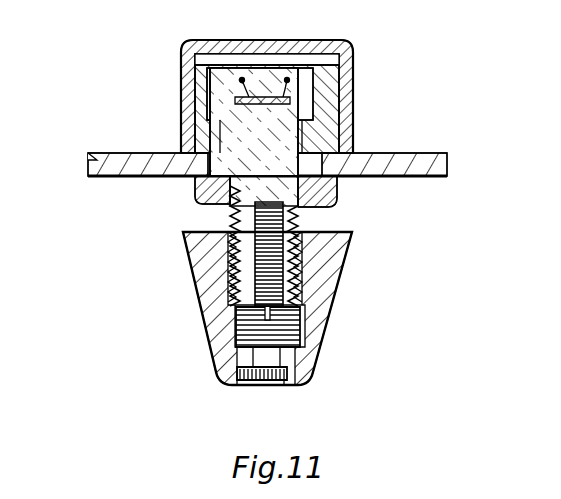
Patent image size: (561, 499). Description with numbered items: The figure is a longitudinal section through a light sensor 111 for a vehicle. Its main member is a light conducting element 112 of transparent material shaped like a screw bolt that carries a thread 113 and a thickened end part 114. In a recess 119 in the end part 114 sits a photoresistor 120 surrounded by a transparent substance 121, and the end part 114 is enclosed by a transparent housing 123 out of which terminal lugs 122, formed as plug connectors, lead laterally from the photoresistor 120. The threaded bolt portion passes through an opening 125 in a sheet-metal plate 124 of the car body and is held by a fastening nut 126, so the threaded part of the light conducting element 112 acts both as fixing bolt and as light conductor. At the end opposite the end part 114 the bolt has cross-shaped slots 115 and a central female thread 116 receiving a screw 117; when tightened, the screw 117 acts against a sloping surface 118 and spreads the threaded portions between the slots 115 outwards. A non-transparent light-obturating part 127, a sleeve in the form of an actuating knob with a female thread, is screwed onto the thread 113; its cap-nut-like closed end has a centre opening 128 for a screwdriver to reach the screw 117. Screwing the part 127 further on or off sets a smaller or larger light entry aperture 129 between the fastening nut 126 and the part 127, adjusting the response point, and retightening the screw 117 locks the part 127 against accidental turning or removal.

The light sensor 111 is at (360, 251).
The light conducting element 112 is at (192, 272).
The thread 113 is at (300, 213).
The thickened end part 114 is at (340, 130).
The cross-shaped slots 115 is at (300, 313).
The central female thread 116 is at (345, 241).
The screw 117 is at (205, 300).
The sloping surface 118 is at (205, 330).
The recess 119 is at (181, 112).
The photoresistor 120 is at (270, 42).
The transparent substance 121 is at (305, 42).
The terminal lugs 122 is at (181, 73).
The transparent housing 123 is at (218, 42).
The sheet-metal plate 124 is at (122, 156).
The opening 125 is at (177, 180).
The fastening nut 126 is at (232, 196).
The light-obturating part 127 is at (222, 348).
The centre opening 128 is at (260, 384).
The light entry aperture 129 is at (203, 215).